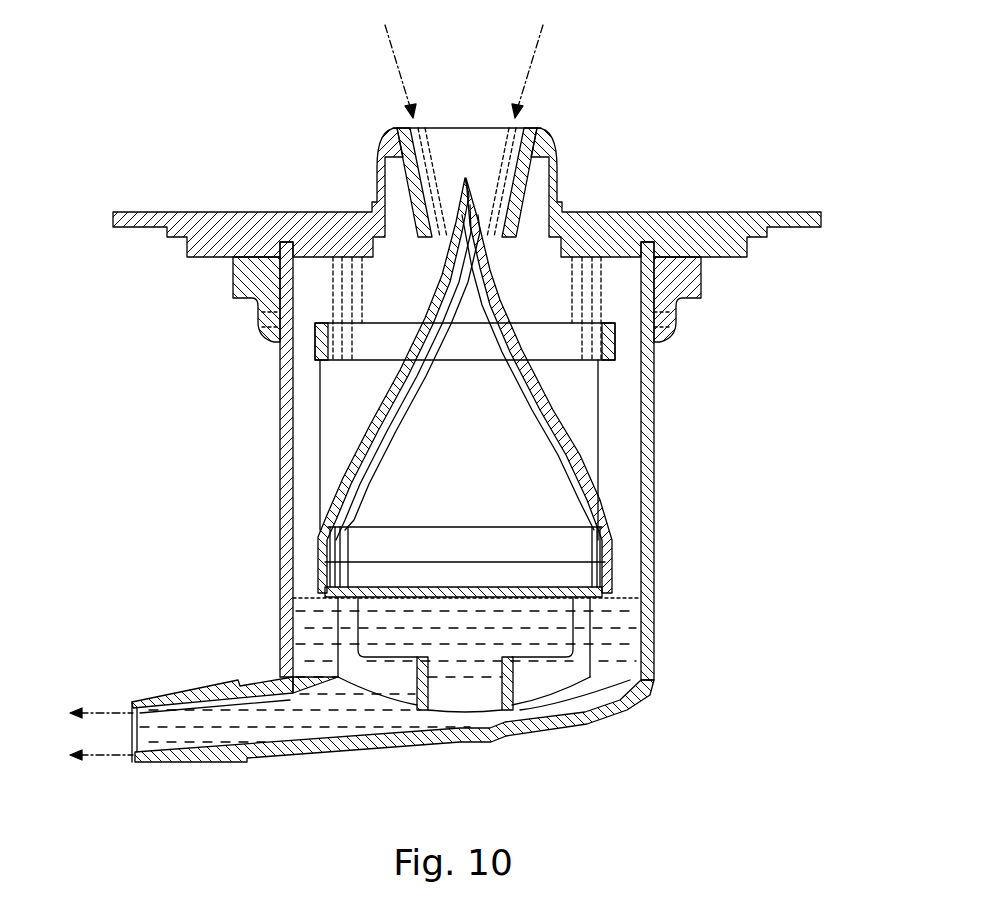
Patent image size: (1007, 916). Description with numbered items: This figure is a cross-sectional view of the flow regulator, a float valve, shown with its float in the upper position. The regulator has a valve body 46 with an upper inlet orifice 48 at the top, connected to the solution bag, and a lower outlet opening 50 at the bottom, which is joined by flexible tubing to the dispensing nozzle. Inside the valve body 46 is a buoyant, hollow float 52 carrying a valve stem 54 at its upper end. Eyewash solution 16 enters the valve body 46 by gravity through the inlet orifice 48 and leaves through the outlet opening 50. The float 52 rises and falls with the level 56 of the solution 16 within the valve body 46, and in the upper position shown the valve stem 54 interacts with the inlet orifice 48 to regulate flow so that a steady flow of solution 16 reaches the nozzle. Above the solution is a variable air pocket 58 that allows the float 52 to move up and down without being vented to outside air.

The sterile eyewash solution 16 is at (528, 87).
The valve body 46 is at (655, 490).
The upper inlet orifice 48 is at (415, 172).
The lower outlet opening 50 is at (193, 713).
The float 52 is at (320, 518).
The valve stem 54 is at (500, 310).
The level of the solution 56 is at (307, 597).
The variable air pocket 58 is at (303, 438).